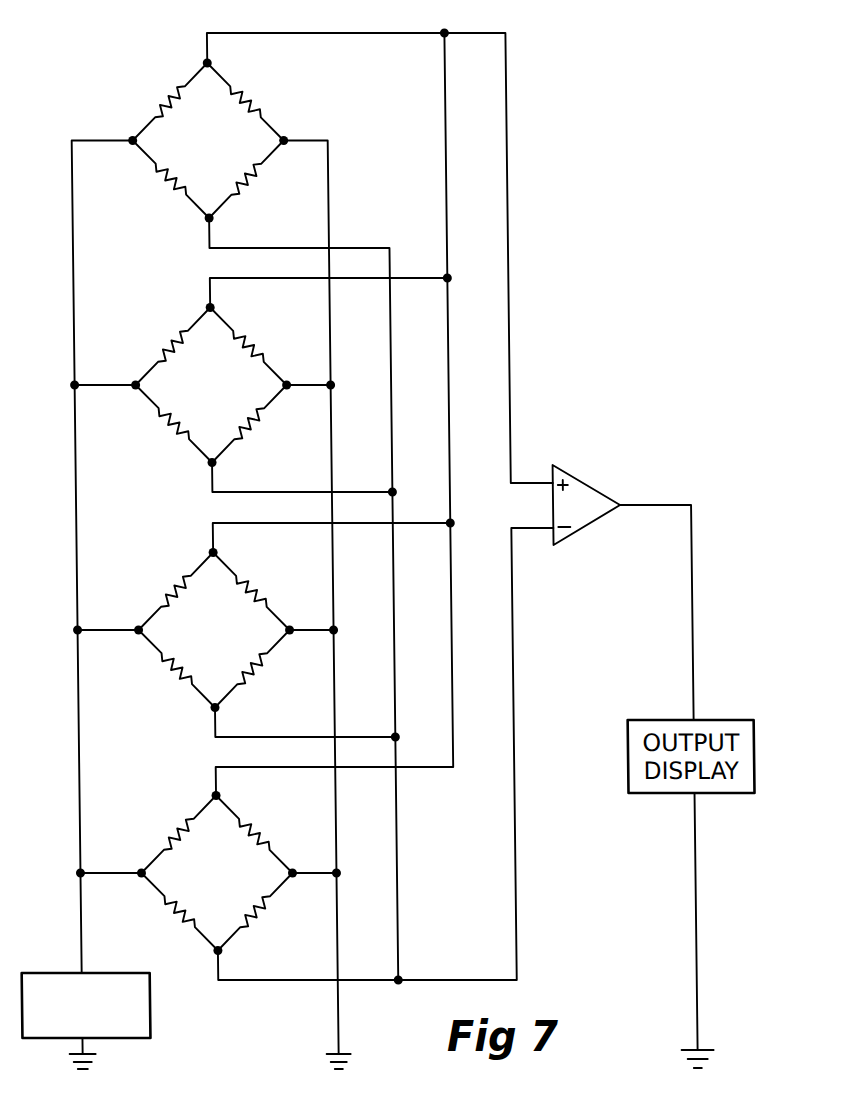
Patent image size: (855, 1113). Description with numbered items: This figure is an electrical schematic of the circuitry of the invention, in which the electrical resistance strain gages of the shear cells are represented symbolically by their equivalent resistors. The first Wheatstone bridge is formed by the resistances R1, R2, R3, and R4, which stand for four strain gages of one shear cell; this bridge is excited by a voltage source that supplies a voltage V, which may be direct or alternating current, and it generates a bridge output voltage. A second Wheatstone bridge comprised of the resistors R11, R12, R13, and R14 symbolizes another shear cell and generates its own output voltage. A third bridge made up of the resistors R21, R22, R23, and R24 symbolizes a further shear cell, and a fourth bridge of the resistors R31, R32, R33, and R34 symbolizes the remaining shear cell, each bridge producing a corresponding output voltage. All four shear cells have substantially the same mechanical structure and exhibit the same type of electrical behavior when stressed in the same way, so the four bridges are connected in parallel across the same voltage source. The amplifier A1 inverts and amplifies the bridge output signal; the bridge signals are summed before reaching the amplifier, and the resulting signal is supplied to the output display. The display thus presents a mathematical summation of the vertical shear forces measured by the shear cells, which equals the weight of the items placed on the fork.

The resistance R1 is at (170, 102).
The resistance R2 is at (246, 102).
The resistance R3 is at (246, 180).
The resistance R4 is at (170, 180).
The resistor R11 is at (172, 347).
The resistor R12 is at (255, 347).
The resistor R13 is at (253, 424).
The resistor R14 is at (174, 424).
The resistor R21 is at (175, 592).
The resistor R22 is at (259, 592).
The resistor R23 is at (258, 669).
The resistor R24 is at (175, 669).
The resistor R31 is at (177, 835).
The resistor R32 is at (259, 835).
The resistor R33 is at (260, 912).
The resistor R34 is at (177, 912).
The amplifier A1 is at (587, 505).
The voltage V is at (85, 991).